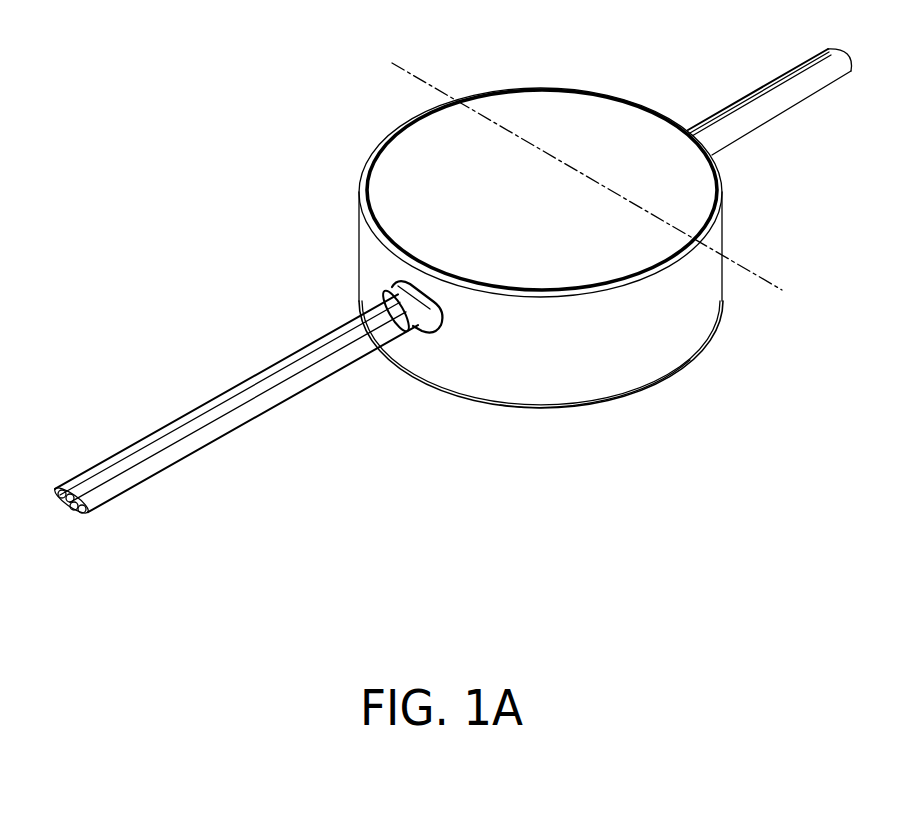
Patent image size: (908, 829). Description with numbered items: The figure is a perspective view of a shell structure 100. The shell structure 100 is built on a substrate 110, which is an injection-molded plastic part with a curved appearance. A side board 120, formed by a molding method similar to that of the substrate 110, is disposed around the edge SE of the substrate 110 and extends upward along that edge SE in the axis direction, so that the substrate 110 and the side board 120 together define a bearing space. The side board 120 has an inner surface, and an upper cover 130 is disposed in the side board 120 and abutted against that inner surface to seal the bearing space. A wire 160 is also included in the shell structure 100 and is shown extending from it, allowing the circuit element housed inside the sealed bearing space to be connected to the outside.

The light emitting device 100 is at (455, 306).
The base 110 is at (572, 410).
The housing 120 is at (697, 318).
The cover 130 is at (567, 102).
The cable 160 is at (790, 102).
The side edge SE is at (655, 386).